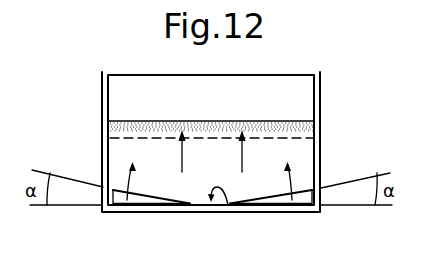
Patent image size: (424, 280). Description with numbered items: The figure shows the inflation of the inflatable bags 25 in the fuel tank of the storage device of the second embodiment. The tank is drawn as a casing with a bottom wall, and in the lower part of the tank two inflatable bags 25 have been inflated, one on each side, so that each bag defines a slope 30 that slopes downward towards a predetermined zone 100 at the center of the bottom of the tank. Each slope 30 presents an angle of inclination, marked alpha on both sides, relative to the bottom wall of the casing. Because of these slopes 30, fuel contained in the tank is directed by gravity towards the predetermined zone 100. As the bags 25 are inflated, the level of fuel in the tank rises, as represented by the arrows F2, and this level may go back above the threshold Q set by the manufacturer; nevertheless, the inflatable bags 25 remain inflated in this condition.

The predetermined zone 100 is at (228, 205).
The inflatable bag 25 is at (138, 200).
The slope 30 is at (140, 207).
The arrows F2 is at (227, 151).
The threshold Q is at (72, 138).